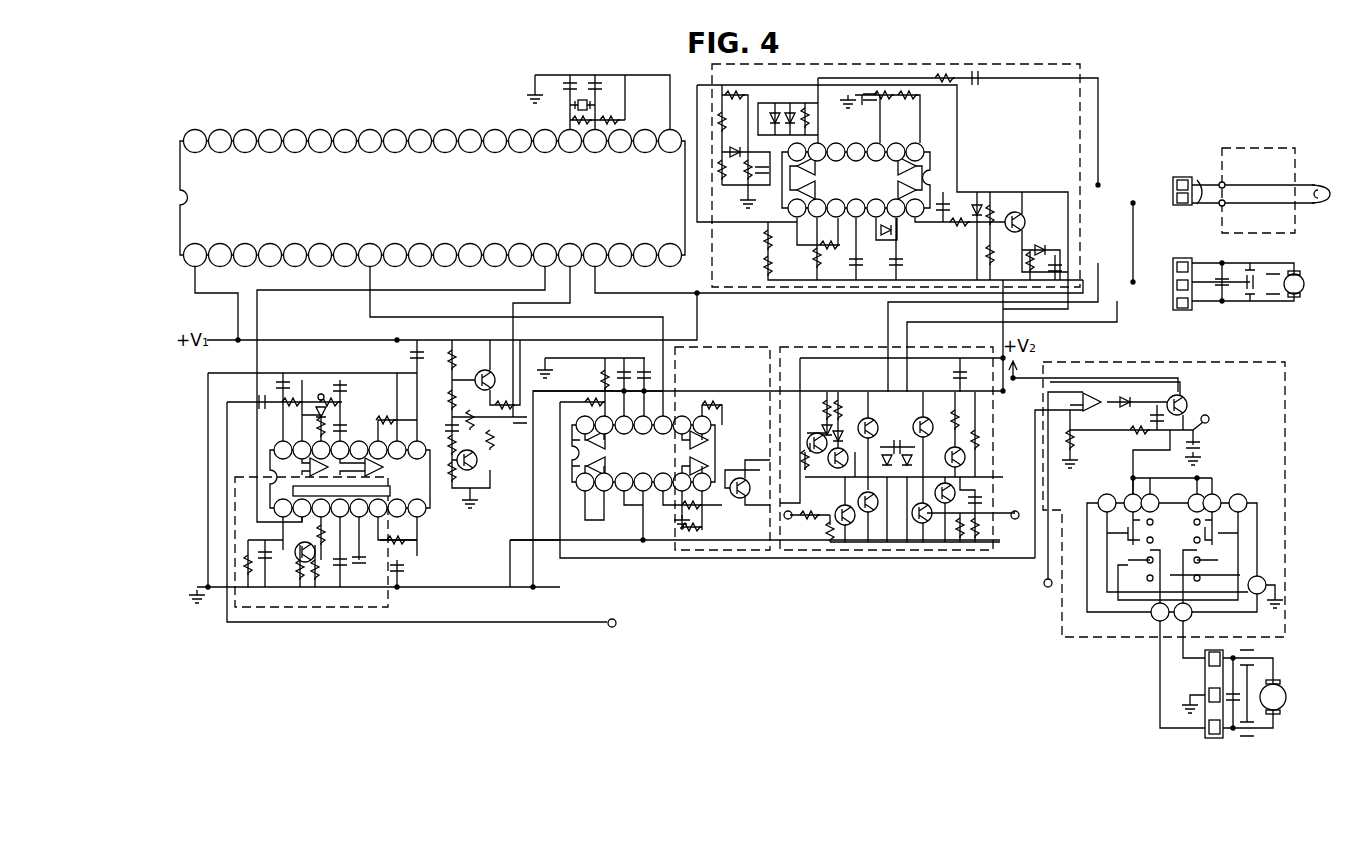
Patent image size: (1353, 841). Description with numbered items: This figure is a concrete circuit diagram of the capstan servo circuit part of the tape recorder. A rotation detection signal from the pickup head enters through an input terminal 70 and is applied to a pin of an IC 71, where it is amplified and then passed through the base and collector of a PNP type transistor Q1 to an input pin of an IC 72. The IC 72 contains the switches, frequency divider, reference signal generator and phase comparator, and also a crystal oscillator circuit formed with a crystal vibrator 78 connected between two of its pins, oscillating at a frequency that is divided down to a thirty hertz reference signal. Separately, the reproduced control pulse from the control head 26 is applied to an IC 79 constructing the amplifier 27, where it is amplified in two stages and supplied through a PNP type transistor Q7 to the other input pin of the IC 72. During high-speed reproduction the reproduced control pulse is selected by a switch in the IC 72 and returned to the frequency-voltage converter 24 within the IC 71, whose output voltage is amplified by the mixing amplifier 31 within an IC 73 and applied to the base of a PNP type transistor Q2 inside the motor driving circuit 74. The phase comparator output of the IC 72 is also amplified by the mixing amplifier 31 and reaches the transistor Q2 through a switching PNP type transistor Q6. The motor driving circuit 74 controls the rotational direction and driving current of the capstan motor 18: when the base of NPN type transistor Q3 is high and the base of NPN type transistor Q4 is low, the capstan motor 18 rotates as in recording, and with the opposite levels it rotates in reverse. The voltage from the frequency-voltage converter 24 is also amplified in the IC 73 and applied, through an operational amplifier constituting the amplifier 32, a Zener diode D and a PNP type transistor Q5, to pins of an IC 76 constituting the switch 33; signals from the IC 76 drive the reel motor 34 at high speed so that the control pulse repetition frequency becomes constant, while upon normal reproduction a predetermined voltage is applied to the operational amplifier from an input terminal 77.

The IC 72 is at (384, 135).
The crystal vibrator 78 is at (566, 100).
The amplifier 27 is at (884, 63).
The IC 79 is at (930, 170).
The PNP type transistor Q7 is at (1020, 212).
The control head 26 is at (1322, 183).
The capstan motor 18 is at (1305, 279).
The frequency-voltage converter 24 is at (298, 610).
The IC 71 is at (430, 485).
The PNP type transistor Q1 is at (468, 424).
The input terminal 70 is at (609, 618).
The IC 73 is at (786, 458).
The mixing amplifier 31 is at (713, 553).
The PNP type transistor Q6 is at (732, 478).
The motor driving circuit 74 is at (843, 553).
The PNP type transistor Q2 is at (838, 470).
The NPN type transistor Q3 is at (840, 528).
The NPN type transistor Q4 is at (912, 510).
The input terminal 77 is at (1043, 590).
The amplifier 32 is at (1164, 484).
The switch 33 is at (1222, 350).
The Zener diode D is at (1129, 437).
The PNP type transistor Q5 is at (1205, 405).
The IC 76 is at (1252, 497).
The reel motor 34 is at (1281, 685).